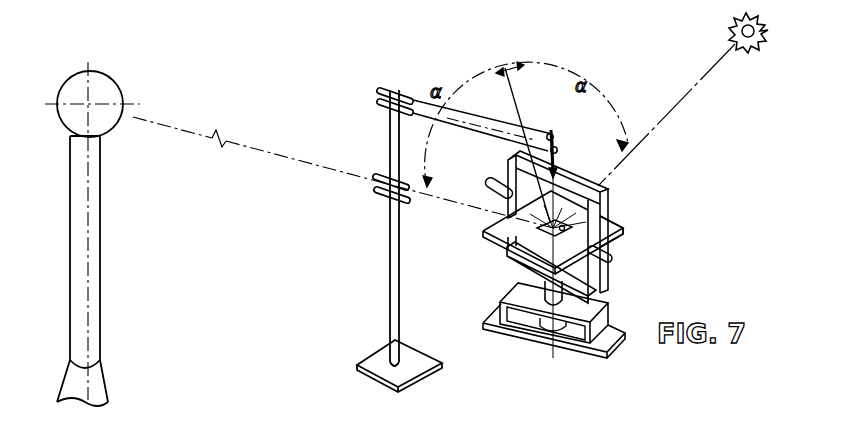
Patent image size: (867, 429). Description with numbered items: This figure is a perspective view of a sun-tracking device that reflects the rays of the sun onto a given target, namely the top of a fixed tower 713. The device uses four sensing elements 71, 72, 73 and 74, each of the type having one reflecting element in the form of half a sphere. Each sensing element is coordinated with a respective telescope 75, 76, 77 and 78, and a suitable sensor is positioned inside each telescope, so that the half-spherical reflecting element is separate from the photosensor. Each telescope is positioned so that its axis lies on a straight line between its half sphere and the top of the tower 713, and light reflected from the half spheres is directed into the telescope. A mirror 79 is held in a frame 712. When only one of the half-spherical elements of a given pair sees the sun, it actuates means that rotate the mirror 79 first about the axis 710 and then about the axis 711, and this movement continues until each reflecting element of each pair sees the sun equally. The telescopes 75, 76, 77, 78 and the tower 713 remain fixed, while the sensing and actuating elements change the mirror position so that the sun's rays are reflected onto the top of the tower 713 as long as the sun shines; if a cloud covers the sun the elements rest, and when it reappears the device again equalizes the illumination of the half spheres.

The sensing element 71 is at (553, 134).
The sensing element 72 is at (558, 150).
The sensing element 73 is at (558, 240).
The sensing element 74 is at (544, 229).
The telescope 75 is at (395, 92).
The telescope 76 is at (385, 107).
The telescope 77 is at (390, 198).
The telescope 78 is at (383, 179).
The mirror 79 is at (617, 229).
The axis 710 is at (523, 284).
The axis 711 is at (609, 256).
The frame 712 is at (598, 193).
The tower 713 is at (110, 124).